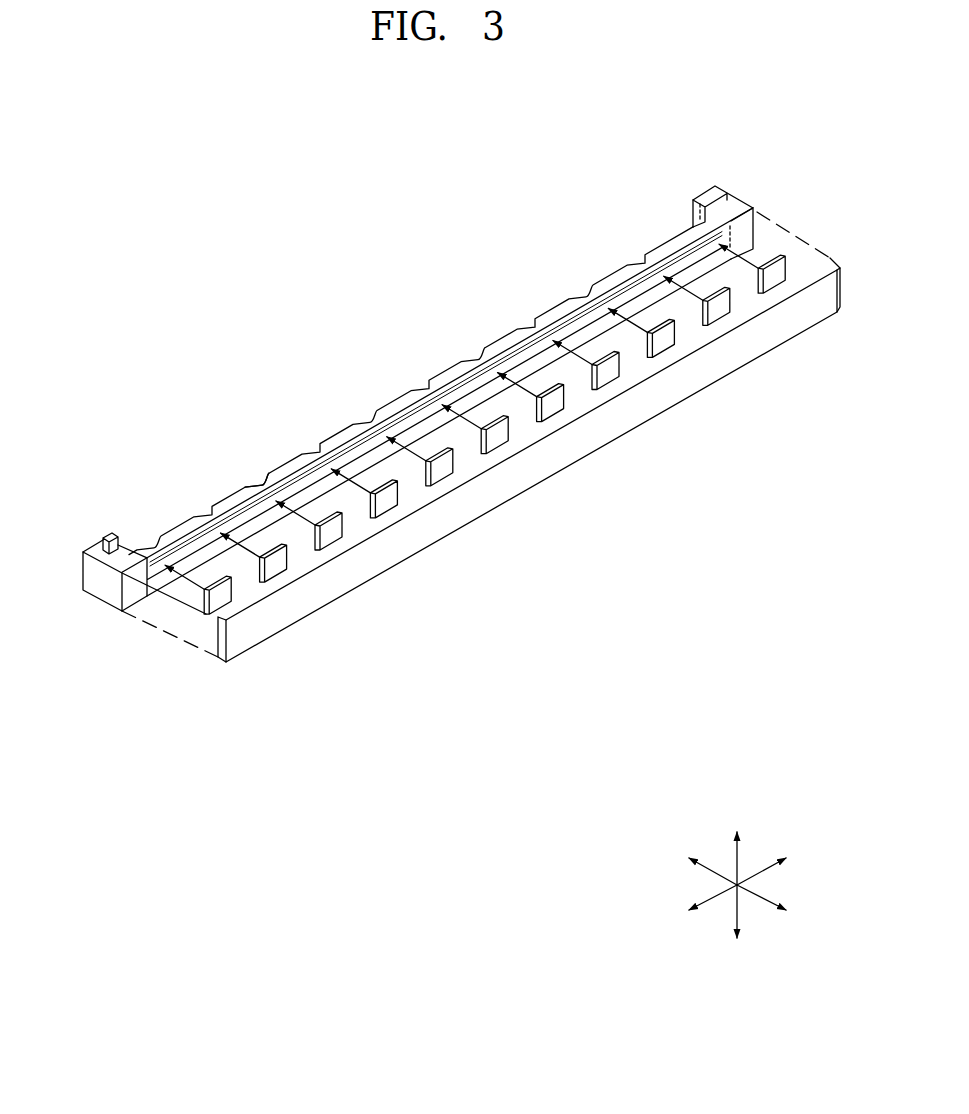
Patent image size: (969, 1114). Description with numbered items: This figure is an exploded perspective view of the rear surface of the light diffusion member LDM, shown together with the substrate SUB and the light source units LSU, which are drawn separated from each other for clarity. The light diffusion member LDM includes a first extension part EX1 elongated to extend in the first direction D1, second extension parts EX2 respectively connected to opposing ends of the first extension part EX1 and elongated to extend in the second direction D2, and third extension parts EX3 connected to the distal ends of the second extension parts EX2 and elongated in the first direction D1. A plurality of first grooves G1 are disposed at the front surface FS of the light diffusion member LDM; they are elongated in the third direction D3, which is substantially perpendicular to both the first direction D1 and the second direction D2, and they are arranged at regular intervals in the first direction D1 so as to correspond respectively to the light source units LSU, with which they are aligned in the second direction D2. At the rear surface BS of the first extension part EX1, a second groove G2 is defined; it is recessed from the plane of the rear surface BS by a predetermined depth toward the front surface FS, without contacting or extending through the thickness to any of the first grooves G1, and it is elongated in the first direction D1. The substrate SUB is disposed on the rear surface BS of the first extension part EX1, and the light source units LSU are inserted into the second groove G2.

The substrate SUB is at (444, 520).
The light diffusion member LDM is at (435, 402).
The light source units LSU is at (333, 537).
The first extension part EX1 is at (455, 372).
The second extension parts EX2 is at (400, 370).
The third extension parts EX3 is at (108, 538).
The front surface FS is at (394, 401).
The rear surface BS is at (514, 349).
The first grooves G1 is at (255, 482).
The second groove G2 is at (302, 486).
The first direction D1 is at (751, 872).
The second direction D2 is at (751, 896).
The third direction D3 is at (736, 869).